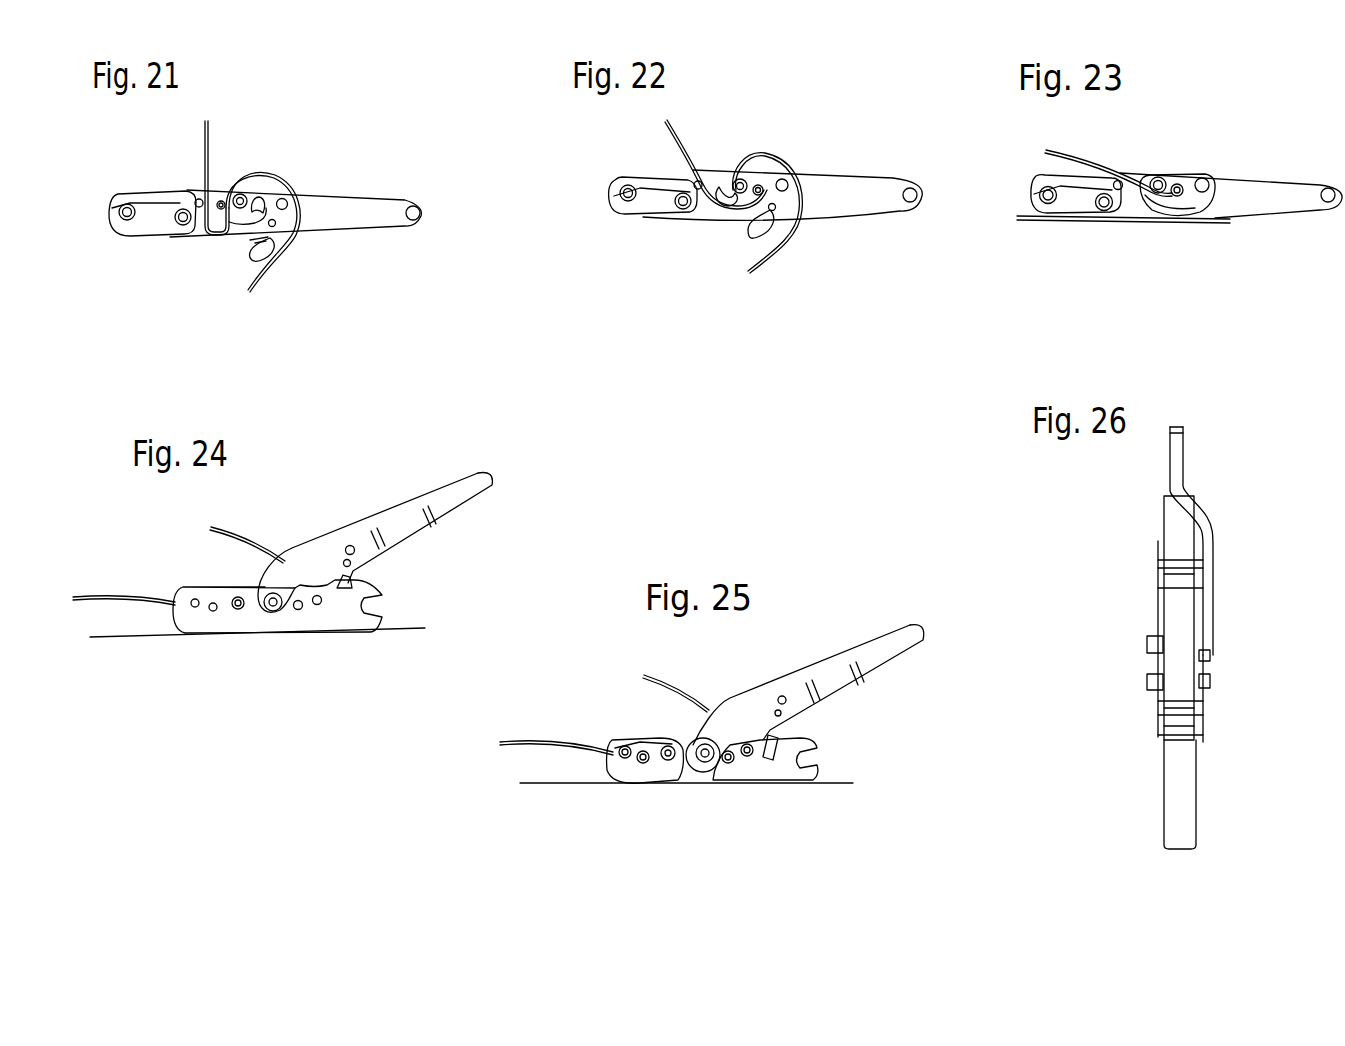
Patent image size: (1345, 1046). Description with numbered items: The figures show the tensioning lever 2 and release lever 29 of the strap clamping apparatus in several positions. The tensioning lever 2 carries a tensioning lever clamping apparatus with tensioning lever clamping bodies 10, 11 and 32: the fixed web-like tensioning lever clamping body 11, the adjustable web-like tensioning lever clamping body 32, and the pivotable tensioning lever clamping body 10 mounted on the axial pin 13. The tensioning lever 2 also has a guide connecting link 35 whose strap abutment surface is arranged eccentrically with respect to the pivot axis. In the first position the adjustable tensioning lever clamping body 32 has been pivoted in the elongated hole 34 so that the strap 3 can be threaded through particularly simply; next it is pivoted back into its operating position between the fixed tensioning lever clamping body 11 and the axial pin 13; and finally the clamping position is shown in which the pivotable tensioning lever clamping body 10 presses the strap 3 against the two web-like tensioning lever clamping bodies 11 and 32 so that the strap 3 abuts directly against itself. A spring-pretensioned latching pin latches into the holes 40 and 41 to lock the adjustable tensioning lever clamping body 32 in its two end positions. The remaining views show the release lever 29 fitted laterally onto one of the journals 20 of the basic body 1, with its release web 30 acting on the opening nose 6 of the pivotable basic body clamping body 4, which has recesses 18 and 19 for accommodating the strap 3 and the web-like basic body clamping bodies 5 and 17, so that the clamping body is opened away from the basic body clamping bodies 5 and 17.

In FIG. 24, the basic body 1 is at (342, 623).
In FIG. 26, the basic body 1 is at (1161, 661).
In FIG. 21, the tensioning lever 2 is at (373, 205).
In FIG. 22, the tensioning lever 2 is at (857, 178).
In FIG. 23, the tensioning lever 2 is at (1265, 205).
In FIG. 21, the strap 3 is at (205, 141).
In FIG. 22, the strap 3 is at (672, 140).
In FIG. 23, the strap 3 is at (1125, 222).
In FIG. 24, the strap 3 is at (243, 542).
In FIG. 25, the strap 3 is at (693, 695).
In FIG. 26, the strap 3 is at (1172, 525).
In FIG. 25, the pivotable basic body clamping body 4 is at (735, 777).
In FIG. 25, the basic body clamping body 5 is at (747, 763).
In FIG. 25, the opening nose 6 is at (763, 760).
In FIG. 21, the tensioning lever clamping body 10 is at (265, 252).
In FIG. 22, the tensioning lever clamping body 10 is at (758, 232).
In FIG. 23, the tensioning lever clamping body 10 is at (1177, 213).
In FIG. 21, the tensioning lever clamping body 11 is at (243, 195).
In FIG. 22, the tensioning lever clamping body 11 is at (740, 179).
In FIG. 23, the tensioning lever clamping body 11 is at (1158, 177).
In FIG. 21, the axial pin 13 is at (293, 188).
In FIG. 22, the axial pin 13 is at (786, 180).
In FIG. 23, the axial pin 13 is at (1204, 178).
In FIG. 25, the basic body clamping body 17 is at (725, 767).
In FIG. 21, the recess 18 is at (262, 243).
In FIG. 21, the recess 19 is at (255, 236).
In FIG. 24, the journal 20 is at (270, 610).
In FIG. 25, the journal 20 is at (707, 750).
In FIG. 26, the journal 20 is at (1210, 679).
In FIG. 24, the release lever 29 is at (392, 530).
In FIG. 25, the release lever 29 is at (880, 660).
In FIG. 26, the release lever 29 is at (1181, 467).
In FIG. 24, the release web 30 is at (350, 577).
In FIG. 25, the release web 30 is at (780, 740).
In FIG. 21, the adjustable tensioning lever clamping body 32 is at (222, 201).
In FIG. 22, the adjustable tensioning lever clamping body 32 is at (760, 185).
In FIG. 23, the adjustable tensioning lever clamping body 32 is at (1178, 184).
In FIG. 21, the elongated hole 34 is at (262, 210).
In FIG. 22, the elongated hole 34 is at (728, 205).
In FIG. 21, the guide connecting link 35 is at (133, 228).
In FIG. 22, the guide connecting link 35 is at (634, 212).
In FIG. 23, the guide connecting link 35 is at (1052, 210).
In FIG. 21, the hole 40 is at (195, 200).
In FIG. 22, the hole 40 is at (694, 182).
In FIG. 23, the hole 40 is at (1118, 180).
In FIG. 21, the hole 41 is at (278, 224).
In FIG. 22, the hole 41 is at (776, 208).